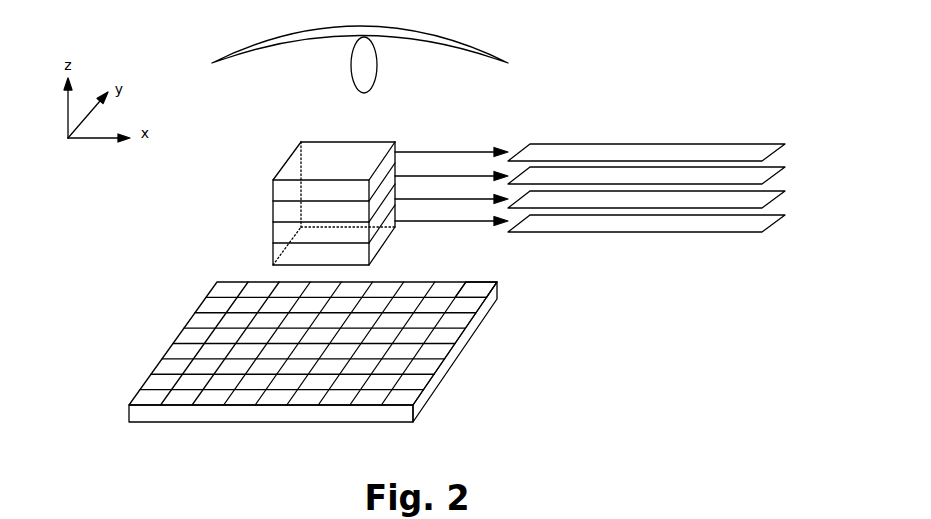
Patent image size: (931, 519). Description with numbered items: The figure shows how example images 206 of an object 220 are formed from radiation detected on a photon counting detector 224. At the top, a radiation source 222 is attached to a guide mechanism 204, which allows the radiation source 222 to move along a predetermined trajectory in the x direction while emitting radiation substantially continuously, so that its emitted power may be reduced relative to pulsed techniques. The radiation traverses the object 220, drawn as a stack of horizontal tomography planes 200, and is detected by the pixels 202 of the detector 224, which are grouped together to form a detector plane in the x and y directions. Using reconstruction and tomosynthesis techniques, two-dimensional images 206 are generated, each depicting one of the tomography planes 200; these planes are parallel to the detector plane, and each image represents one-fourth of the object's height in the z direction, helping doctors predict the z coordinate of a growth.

The tomography planes 200 is at (264, 182).
The pixels 202 is at (220, 278).
The guide mechanism 204 is at (250, 49).
The images 206 is at (785, 144).
The object 220 is at (301, 142).
The radiation source 222 is at (350, 65).
The photon counting detector 224 is at (498, 282).